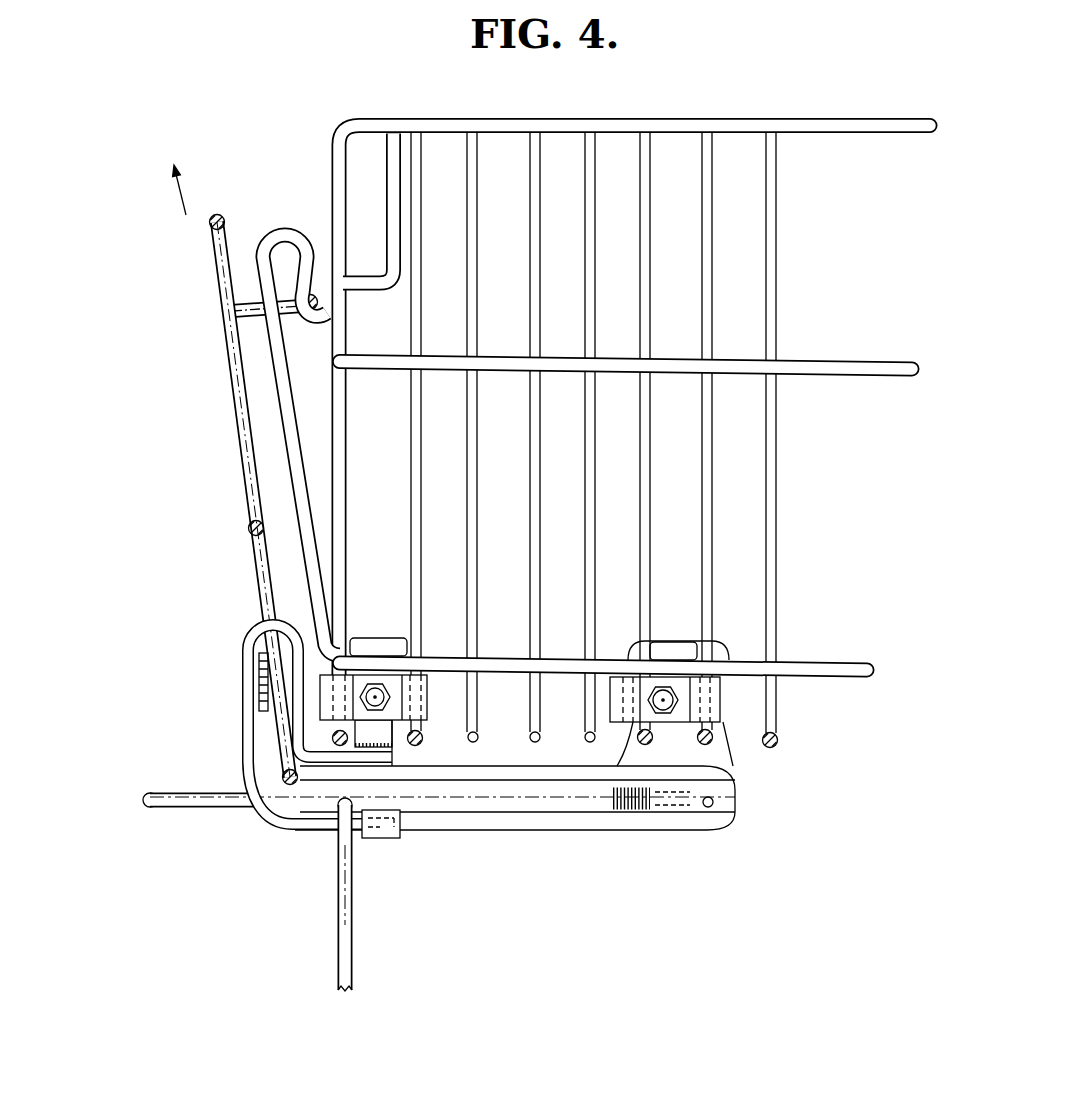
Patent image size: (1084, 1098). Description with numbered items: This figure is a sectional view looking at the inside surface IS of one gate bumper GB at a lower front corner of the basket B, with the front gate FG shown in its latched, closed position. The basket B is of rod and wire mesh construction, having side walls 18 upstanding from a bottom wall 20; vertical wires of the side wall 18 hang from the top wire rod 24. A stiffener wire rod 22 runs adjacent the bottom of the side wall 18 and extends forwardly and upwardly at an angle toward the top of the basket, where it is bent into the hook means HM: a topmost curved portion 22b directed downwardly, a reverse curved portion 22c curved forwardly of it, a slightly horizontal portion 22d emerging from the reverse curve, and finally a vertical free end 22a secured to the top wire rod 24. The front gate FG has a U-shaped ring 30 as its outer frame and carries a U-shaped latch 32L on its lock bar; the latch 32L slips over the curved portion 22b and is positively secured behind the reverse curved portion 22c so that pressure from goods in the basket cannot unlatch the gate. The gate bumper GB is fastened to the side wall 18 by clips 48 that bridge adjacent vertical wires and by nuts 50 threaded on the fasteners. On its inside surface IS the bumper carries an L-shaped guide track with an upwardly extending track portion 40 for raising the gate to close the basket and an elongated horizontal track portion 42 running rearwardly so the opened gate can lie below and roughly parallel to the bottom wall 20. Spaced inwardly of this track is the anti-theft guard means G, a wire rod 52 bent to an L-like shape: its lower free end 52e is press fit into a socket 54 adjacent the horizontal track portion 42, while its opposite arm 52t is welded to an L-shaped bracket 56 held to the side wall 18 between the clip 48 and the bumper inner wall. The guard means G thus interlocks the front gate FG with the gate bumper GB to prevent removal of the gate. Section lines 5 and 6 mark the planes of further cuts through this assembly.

The side walls 18 is at (650, 163).
The bottom wall 20 is at (592, 744).
The stiffener wire rod 22 is at (858, 674).
The free end of stiffener wire rod 22a is at (390, 147).
The curved portion 22b is at (273, 233).
The reverse curved portion 22c is at (312, 327).
The slightly horizontal portion 22d is at (362, 278).
The top wire rod 24 is at (565, 122).
The U-shaped ring 30 is at (257, 563).
The U-shaped latch 32L is at (250, 300).
The upwardly extending track portion 40 is at (267, 697).
The horizontally extending track portion 42 is at (513, 800).
The clips 48 is at (427, 697).
The nuts 50 is at (375, 683).
The wire rod 52 is at (248, 658).
The free end of wire rod 52e is at (353, 820).
The clip tab 52t is at (380, 757).
The socket 54 is at (387, 826).
The L-shaped bracket 56 is at (433, 727).
The basket B is at (832, 106).
The hook means HM is at (288, 198).
The front gate FG is at (237, 455).
The anti-theft guard means G is at (313, 823).
The inside surface IS is at (655, 820).
The gate bumpers GB is at (742, 802).
The section line 5 is at (125, 110).
The section line 6 is at (375, 622).